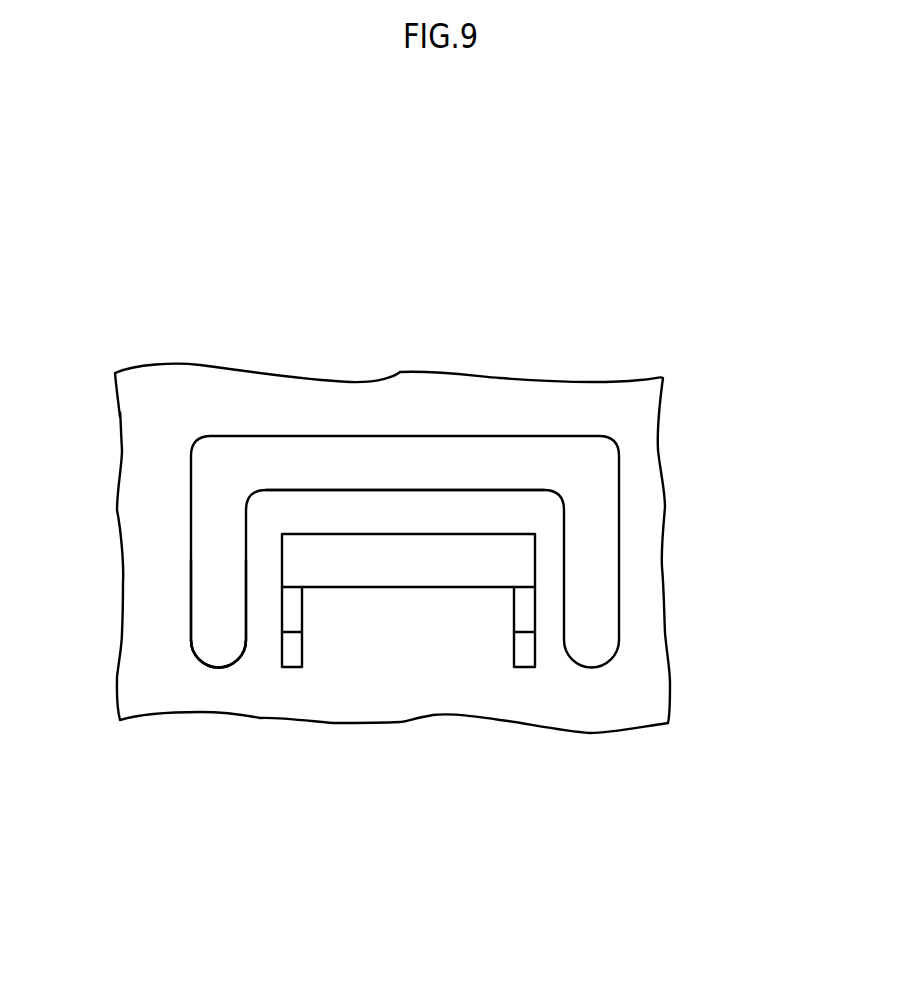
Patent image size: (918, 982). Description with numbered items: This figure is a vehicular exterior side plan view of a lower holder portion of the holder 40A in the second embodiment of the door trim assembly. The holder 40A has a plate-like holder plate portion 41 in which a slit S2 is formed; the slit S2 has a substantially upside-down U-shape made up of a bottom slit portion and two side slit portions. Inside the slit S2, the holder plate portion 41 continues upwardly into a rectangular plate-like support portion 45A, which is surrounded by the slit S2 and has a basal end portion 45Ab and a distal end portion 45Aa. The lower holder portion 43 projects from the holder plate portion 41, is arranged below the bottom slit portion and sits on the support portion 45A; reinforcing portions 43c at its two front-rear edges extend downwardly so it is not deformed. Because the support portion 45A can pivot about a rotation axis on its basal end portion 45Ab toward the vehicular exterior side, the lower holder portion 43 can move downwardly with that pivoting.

The holder 40A is at (667, 508).
The holder plate portion 41 is at (312, 408).
The lower holder portion 43 is at (402, 532).
The reinforcing portion 43c is at (292, 610).
The support portion 45A is at (535, 518).
The distal end portion 45Aa is at (495, 488).
The basal end portion 45Ab is at (258, 648).
The slit S2 is at (246, 548).